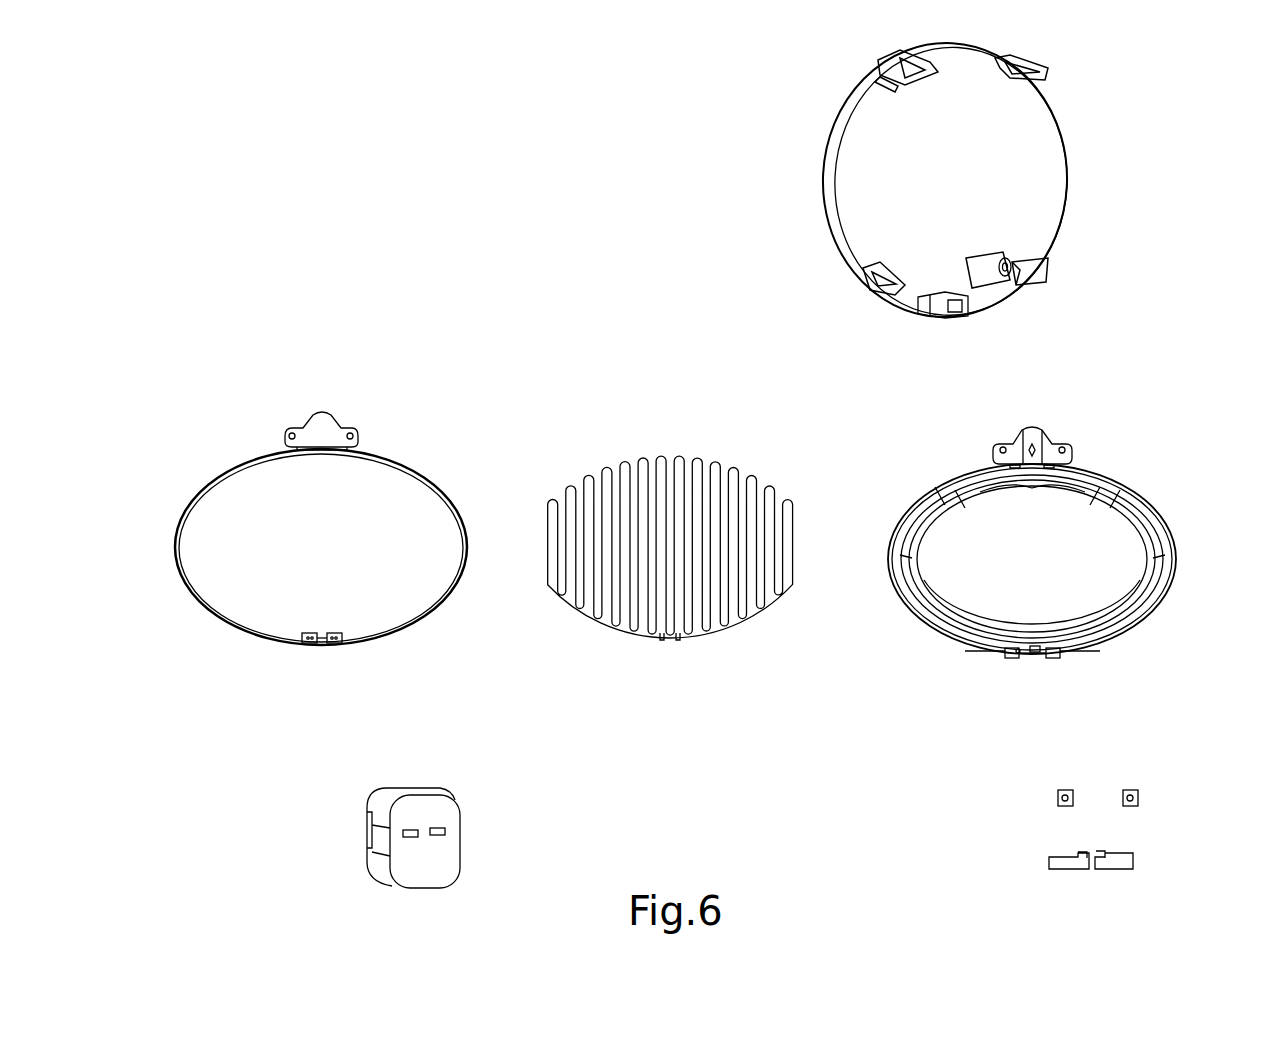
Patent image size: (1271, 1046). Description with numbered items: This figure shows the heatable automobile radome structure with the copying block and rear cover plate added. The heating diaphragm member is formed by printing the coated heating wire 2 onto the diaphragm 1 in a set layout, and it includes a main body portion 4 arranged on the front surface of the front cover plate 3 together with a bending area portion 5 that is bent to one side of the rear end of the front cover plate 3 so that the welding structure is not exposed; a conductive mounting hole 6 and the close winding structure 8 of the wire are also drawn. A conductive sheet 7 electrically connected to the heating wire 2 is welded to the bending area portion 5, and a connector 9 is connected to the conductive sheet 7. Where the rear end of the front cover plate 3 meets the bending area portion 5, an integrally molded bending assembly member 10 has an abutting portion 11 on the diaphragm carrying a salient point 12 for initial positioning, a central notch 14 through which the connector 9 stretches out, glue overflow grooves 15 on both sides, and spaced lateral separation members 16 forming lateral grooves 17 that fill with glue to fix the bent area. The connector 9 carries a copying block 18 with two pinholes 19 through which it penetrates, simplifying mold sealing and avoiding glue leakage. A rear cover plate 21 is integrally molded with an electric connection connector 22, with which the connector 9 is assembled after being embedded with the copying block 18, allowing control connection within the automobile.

The diaphragm 1 is at (321, 533).
The heating wire 2 is at (670, 550).
The front cover plate 3 is at (1010, 549).
The main body portion 4 is at (350, 493).
The bending area portion 5 is at (317, 643).
The conductive mounting hole 6 is at (330, 641).
The conductive sheet 7 is at (1058, 802).
The close winding structure 8 is at (636, 674).
The connector 9 is at (1065, 862).
The bending assembly member 10 is at (1013, 657).
The abutting portion on the diaphragm 11 is at (1055, 652).
The salient point 12 is at (1024, 654).
The notch 14 is at (1037, 648).
The glue overflow groove 15 is at (1100, 651).
The lateral separation member 16 is at (1018, 650).
The lateral groove 17 is at (990, 655).
The copying block 18 is at (463, 871).
The pinhole 19 is at (445, 832).
The rear cover plate 21 is at (1028, 185).
The electric connection connector 22 is at (963, 303).